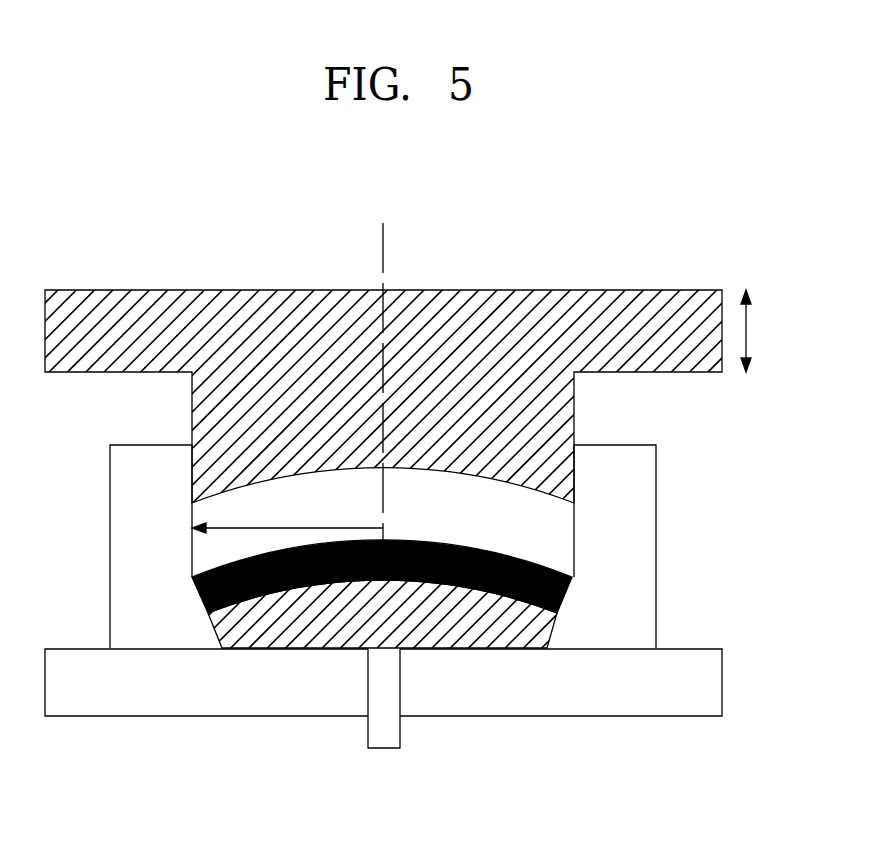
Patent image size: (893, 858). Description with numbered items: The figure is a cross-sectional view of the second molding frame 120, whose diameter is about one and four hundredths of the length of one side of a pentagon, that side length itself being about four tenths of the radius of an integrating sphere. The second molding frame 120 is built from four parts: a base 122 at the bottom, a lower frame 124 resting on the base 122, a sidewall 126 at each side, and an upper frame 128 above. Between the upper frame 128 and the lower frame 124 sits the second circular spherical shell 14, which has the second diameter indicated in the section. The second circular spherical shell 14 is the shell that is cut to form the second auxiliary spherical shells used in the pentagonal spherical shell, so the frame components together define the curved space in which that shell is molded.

The second molding frame 120 is at (203, 808).
The upper frame 128 is at (486, 300).
The sidewall 126 is at (646, 600).
The second circular spherical shell 14 is at (542, 566).
The lower frame 124 is at (462, 650).
The base 122 is at (628, 708).